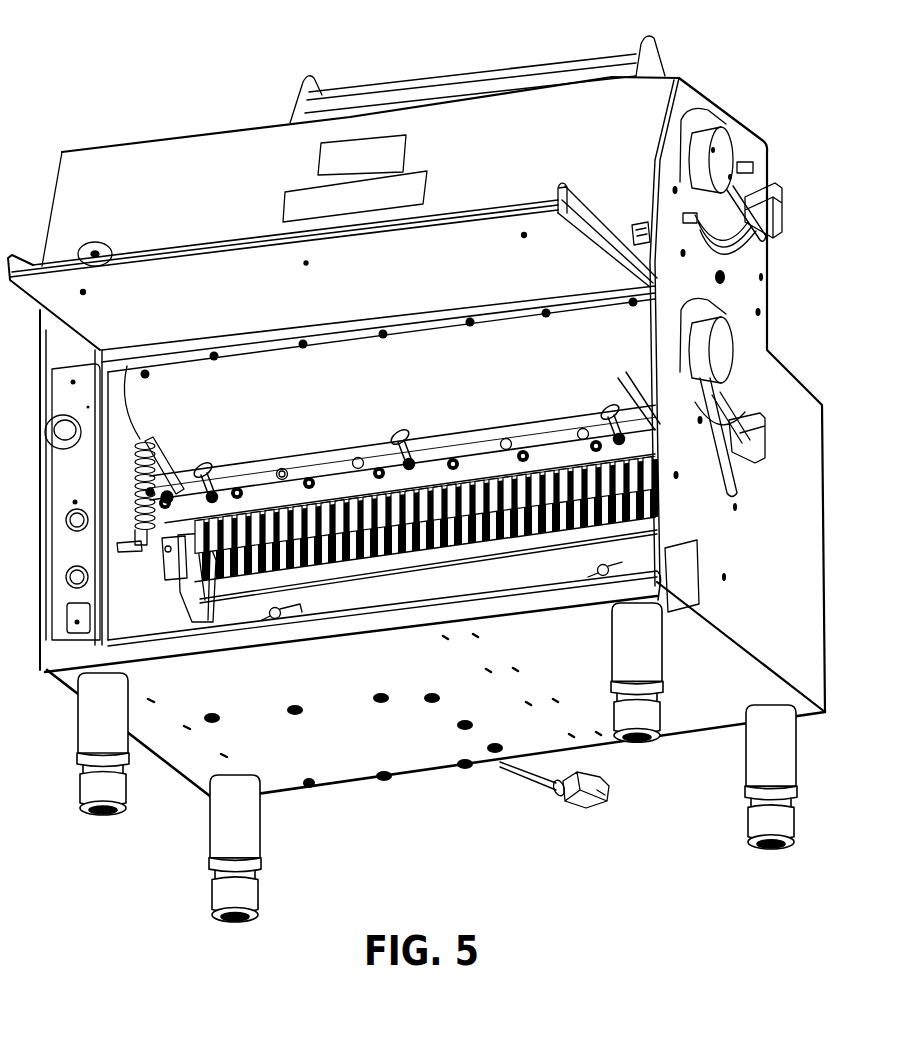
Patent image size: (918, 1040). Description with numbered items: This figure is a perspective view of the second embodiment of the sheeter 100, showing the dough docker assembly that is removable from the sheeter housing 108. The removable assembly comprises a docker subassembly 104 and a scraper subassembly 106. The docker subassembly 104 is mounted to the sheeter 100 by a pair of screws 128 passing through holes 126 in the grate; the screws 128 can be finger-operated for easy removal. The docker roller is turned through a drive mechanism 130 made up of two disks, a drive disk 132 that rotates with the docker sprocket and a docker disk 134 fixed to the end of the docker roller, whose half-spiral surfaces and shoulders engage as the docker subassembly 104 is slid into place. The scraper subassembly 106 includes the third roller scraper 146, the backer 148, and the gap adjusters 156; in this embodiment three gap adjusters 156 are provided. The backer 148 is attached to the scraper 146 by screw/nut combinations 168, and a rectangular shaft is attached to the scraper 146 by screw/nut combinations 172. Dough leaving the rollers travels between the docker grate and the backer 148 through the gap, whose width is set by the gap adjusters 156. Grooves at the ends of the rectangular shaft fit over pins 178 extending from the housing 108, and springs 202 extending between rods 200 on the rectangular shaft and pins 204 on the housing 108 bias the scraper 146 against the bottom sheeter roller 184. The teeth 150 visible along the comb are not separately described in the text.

The sheeter 100 is at (119, 87).
The docker subassembly 104 is at (346, 590).
The scraper subassembly 106 is at (319, 446).
The sheeter housing 108 is at (793, 378).
The holes 126 is at (350, 600).
The screws 128 is at (270, 618).
The drive mechanism 130 is at (167, 579).
The drive disk 132 is at (165, 563).
The docker disk 134 is at (187, 562).
The third roller scraper 146 is at (510, 427).
The backer 148 is at (433, 553).
The upper comb teeth 150 is at (393, 560).
The gap adjuster 156 is at (197, 460).
The screw/nut combinations 168 is at (279, 469).
The screw/nut combinations 172 is at (285, 468).
The pins 178 is at (148, 553).
The lower sheeter roller 184 is at (628, 357).
The rods 200 is at (165, 462).
The springs 202 is at (141, 440).
The pins 204 is at (120, 540).